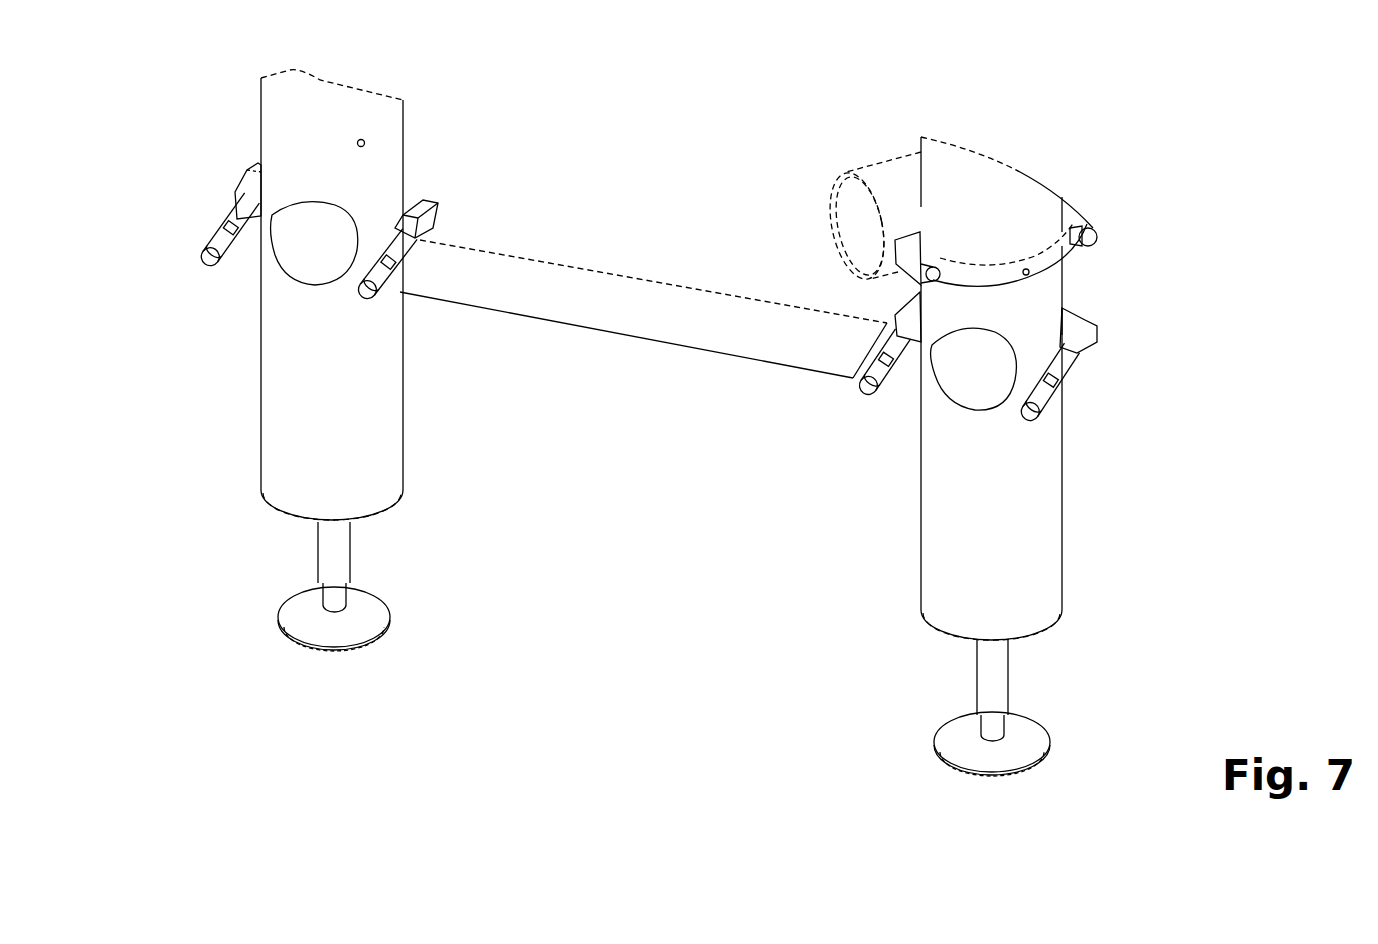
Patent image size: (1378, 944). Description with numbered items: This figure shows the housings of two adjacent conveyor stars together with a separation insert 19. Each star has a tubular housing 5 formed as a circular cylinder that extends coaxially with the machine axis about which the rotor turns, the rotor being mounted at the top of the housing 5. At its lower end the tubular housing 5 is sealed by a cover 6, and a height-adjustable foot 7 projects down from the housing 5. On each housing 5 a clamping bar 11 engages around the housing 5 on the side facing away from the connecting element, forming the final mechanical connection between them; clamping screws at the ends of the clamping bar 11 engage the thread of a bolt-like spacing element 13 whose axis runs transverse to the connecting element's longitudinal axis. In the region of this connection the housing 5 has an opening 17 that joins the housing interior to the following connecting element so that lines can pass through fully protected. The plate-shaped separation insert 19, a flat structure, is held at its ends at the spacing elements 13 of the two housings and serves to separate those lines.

The tubular housing 5 is at (306, 475).
The cover 6 is at (388, 510).
The height-adjustable foot 7 is at (330, 588).
The clamping bar 11 is at (423, 197).
The spacing element 13 is at (232, 218).
The opening 17 is at (313, 220).
The separation insert 19 is at (625, 307).